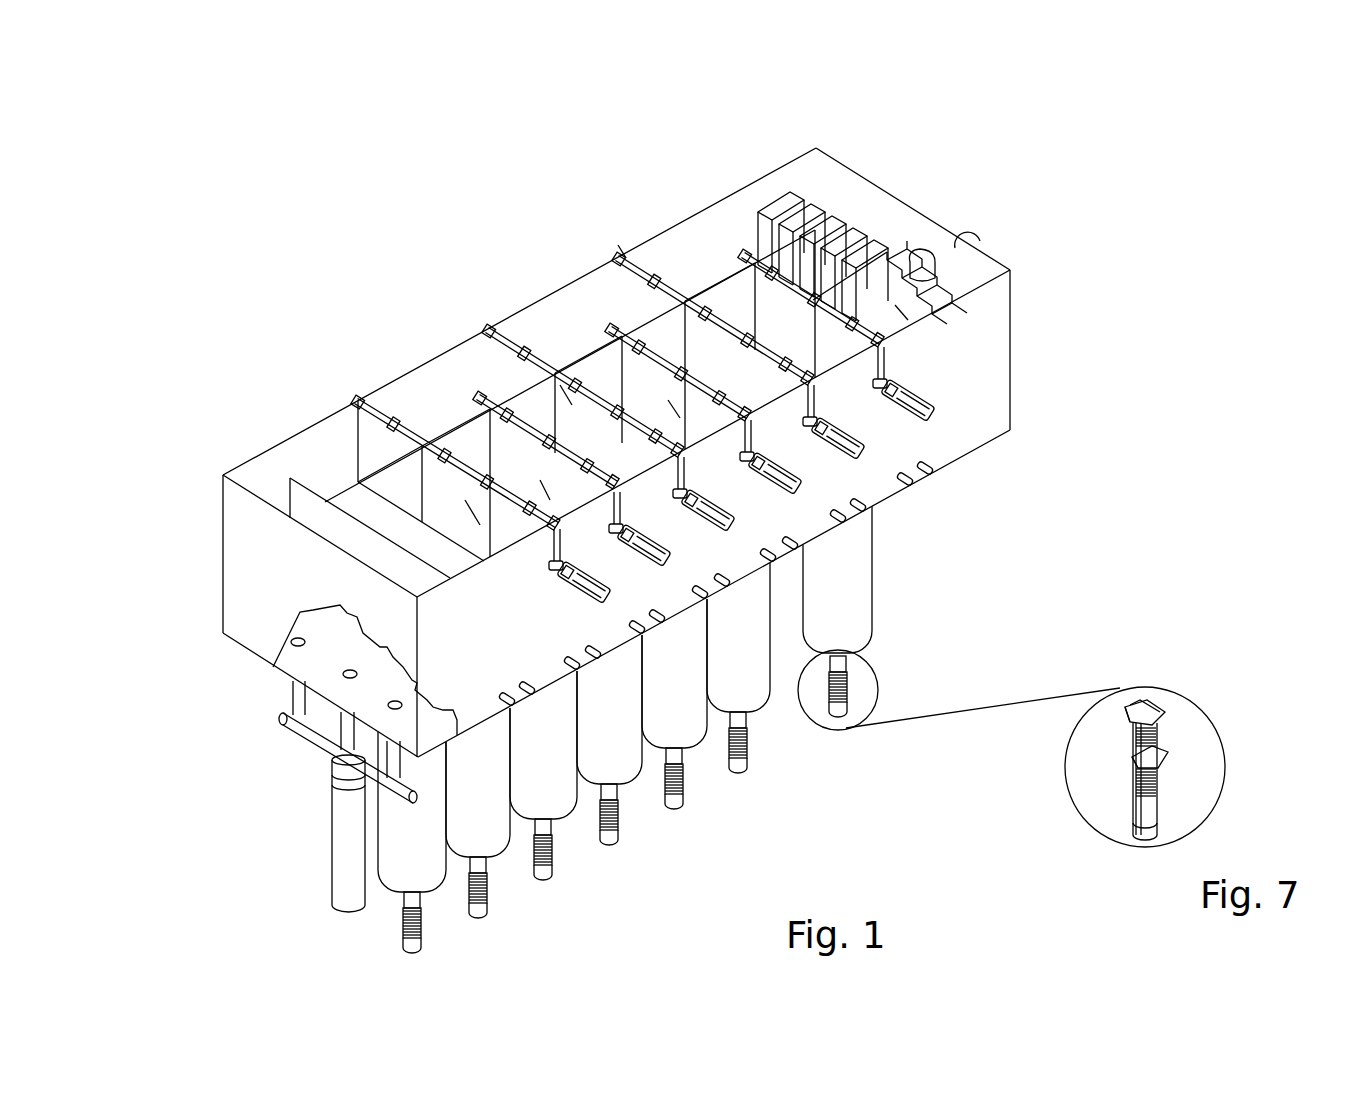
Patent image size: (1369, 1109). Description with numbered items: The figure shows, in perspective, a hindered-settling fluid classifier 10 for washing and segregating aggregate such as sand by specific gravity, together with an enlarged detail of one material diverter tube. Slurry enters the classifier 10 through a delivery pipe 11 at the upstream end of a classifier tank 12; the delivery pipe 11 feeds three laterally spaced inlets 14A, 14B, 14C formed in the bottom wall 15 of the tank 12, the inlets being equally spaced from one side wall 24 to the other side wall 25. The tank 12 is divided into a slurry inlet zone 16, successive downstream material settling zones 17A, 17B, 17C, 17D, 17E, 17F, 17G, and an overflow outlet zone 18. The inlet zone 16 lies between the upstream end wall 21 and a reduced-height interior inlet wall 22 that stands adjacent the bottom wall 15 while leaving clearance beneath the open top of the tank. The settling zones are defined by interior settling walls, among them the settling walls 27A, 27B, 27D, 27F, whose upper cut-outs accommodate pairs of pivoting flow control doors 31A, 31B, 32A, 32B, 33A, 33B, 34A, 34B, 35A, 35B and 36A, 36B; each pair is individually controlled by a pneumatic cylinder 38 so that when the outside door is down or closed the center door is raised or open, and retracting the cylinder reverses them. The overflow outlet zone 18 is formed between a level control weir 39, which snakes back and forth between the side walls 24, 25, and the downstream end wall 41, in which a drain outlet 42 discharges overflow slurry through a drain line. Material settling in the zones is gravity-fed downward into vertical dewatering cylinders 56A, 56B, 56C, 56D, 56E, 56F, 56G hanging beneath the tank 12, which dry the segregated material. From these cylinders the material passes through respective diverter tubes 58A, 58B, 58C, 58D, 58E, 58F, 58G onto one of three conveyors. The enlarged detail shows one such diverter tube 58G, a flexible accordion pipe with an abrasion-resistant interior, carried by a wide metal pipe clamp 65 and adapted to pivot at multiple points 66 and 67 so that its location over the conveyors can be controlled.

In FIG. 1, the hindered-settling fluid classifier 10 is at (308, 273).
In FIG. 1, the delivery pipe 11 is at (330, 818).
In FIG. 1, the classifier tank 12 is at (607, 421).
In FIG. 1, the inlet 14A is at (390, 700).
In FIG. 1, the inlet 14B is at (345, 668).
In FIG. 1, the inlet 14C is at (290, 635).
In FIG. 1, the bottom wall 15 is at (408, 735).
In FIG. 1, the slurry inlet zone 16 is at (250, 470).
In FIG. 1, the material settling zone 17A is at (341, 455).
In FIG. 1, the material settling zone 17B is at (394, 372).
In FIG. 1, the material settling zone 17C is at (446, 346).
In FIG. 1, the material settling zone 17D is at (523, 300).
In FIG. 1, the material settling zone 17E is at (584, 265).
In FIG. 1, the material settling zone 17F is at (648, 228).
In FIG. 1, the material settling zone 17G is at (714, 198).
In FIG. 1, the overflow outlet zone 18 is at (784, 163).
In FIG. 1, the upstream end wall 21 is at (240, 587).
In FIG. 1, the interior inlet wall 22 is at (327, 520).
In FIG. 1, the side wall 24 is at (987, 383).
In FIG. 1, the side wall 25 is at (315, 512).
In FIG. 1, the interior settling wall 27A is at (451, 530).
In FIG. 1, the interior settling wall 27B is at (487, 456).
In FIG. 1, the interior settling wall 27D is at (582, 383).
In FIG. 1, the interior settling wall 27F is at (715, 306).
In FIG. 1, the pivoting flow control door 31A is at (393, 403).
In FIG. 1, the pivoting flow control door 31B is at (472, 518).
In FIG. 1, the pivoting flow control door 32A is at (637, 453).
In FIG. 1, the pivoting flow control door 32B is at (548, 490).
In FIG. 1, the pivoting flow control door 33A is at (550, 318).
In FIG. 1, the pivoting flow control door 33B is at (567, 397).
In FIG. 1, the pivoting flow control door 34A is at (770, 385).
In FIG. 1, the pivoting flow control door 34B is at (674, 408).
In FIG. 1, the pivoting flow control door 35A is at (677, 241).
In FIG. 1, the pivoting flow control door 35B is at (620, 252).
In FIG. 1, the pivoting flow control door 36A is at (902, 312).
In FIG. 1, the pivoting flow control door 36B is at (810, 337).
In FIG. 1, the pneumatic cylinder 38 is at (588, 597).
In FIG. 1, the level control weir 39 is at (835, 210).
In FIG. 1, the downstream end wall 41 is at (895, 215).
In FIG. 1, the drain outlet 42 is at (930, 262).
In FIG. 1, the dewatering cylinder 56A is at (393, 831).
In FIG. 1, the dewatering cylinder 56B is at (459, 801).
In FIG. 1, the dewatering cylinder 56C is at (526, 756).
In FIG. 1, the dewatering cylinder 56D is at (590, 718).
In FIG. 1, the dewatering cylinder 56E is at (657, 683).
In FIG. 1, the dewatering cylinder 56F is at (722, 647).
In FIG. 1, the dewatering cylinder 56G is at (819, 584).
In FIG. 1, the diverter tube 58A is at (400, 922).
In FIG. 1, the diverter tube 58B is at (464, 905).
In FIG. 1, the diverter tube 58C is at (529, 862).
In FIG. 1, the diverter tube 58D is at (596, 818).
In FIG. 1, the diverter tube 58E is at (660, 785).
In FIG. 1, the diverter tube 58F is at (727, 752).
In FIG. 1, the diverter tube 58G is at (836, 693).
In FIG. 7, the diverter tube 58G is at (1155, 803).
In FIG. 7, the pipe clamp 65 is at (1168, 755).
In FIG. 7, the pivot point 66 is at (1132, 723).
In FIG. 7, the pivot point 67 is at (1132, 758).